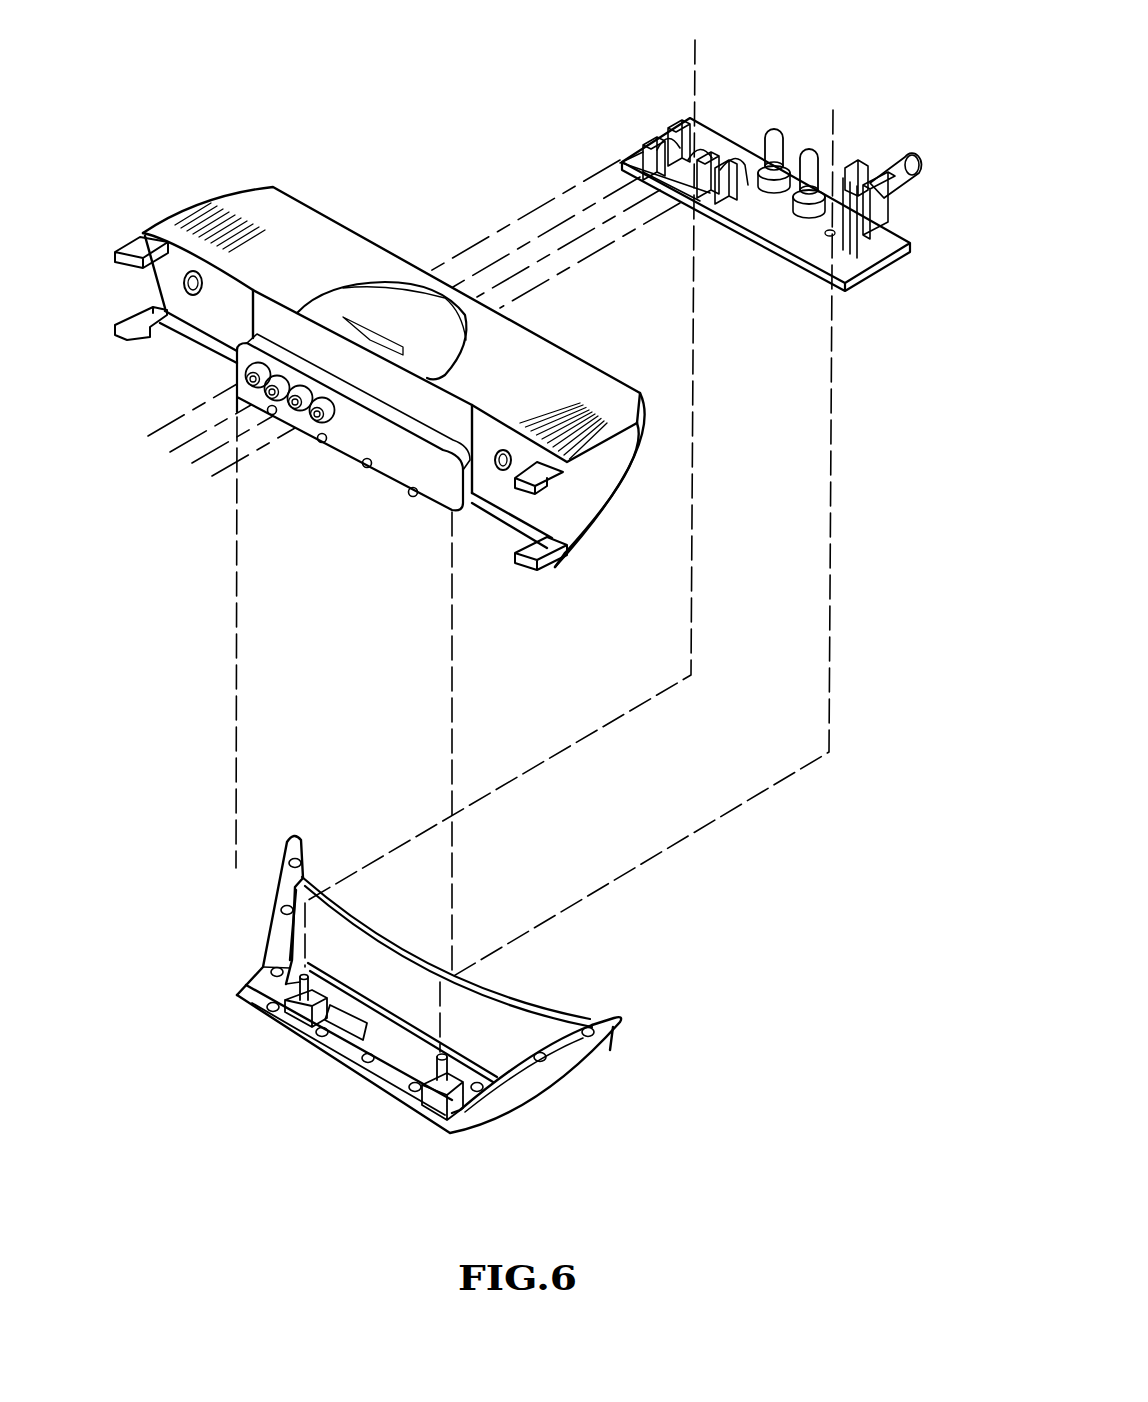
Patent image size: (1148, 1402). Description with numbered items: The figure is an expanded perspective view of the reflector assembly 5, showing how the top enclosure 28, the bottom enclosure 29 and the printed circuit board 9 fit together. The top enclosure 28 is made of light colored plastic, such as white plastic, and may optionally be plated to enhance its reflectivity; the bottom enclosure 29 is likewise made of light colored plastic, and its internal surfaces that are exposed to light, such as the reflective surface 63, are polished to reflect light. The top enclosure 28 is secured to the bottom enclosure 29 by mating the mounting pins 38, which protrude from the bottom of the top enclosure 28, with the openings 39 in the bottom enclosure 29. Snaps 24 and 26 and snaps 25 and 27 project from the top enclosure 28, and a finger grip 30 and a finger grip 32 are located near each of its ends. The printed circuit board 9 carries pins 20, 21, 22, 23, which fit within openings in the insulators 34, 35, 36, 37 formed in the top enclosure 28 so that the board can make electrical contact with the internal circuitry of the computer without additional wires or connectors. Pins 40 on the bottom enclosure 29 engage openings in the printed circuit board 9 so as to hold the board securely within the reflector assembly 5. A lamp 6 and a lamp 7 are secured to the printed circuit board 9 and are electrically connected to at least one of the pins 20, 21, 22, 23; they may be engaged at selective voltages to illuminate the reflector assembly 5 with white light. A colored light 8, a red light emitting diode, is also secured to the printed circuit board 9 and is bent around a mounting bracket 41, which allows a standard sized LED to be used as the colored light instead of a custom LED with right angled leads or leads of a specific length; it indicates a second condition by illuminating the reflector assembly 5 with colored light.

The reflector assembly 5 is at (377, 62).
The lamp 6 is at (813, 148).
The lamp 7 is at (769, 126).
The colored light 8 is at (899, 158).
The printed circuit board 9 is at (862, 266).
The pin 20 is at (700, 155).
The pin 21 is at (677, 121).
The pin 22 is at (648, 138).
The pin 23 is at (620, 162).
The snap 24 is at (543, 480).
The snap 25 is at (531, 575).
The snap 26 is at (120, 238).
The snap 27 is at (143, 345).
The top enclosure 28 is at (372, 256).
The bottom enclosure 29 is at (560, 1090).
The finger grip 30 is at (199, 212).
The finger grip 32 is at (593, 407).
The insulator 34 is at (247, 372).
The insulator 35 is at (277, 376).
The insulator 36 is at (310, 392).
The insulator 37 is at (326, 424).
The mounting pins 38 is at (275, 406).
The openings 39 is at (300, 861).
The pins 40 is at (298, 978).
The mounting bracket 41 is at (852, 164).
The reflective surface 63 is at (395, 966).